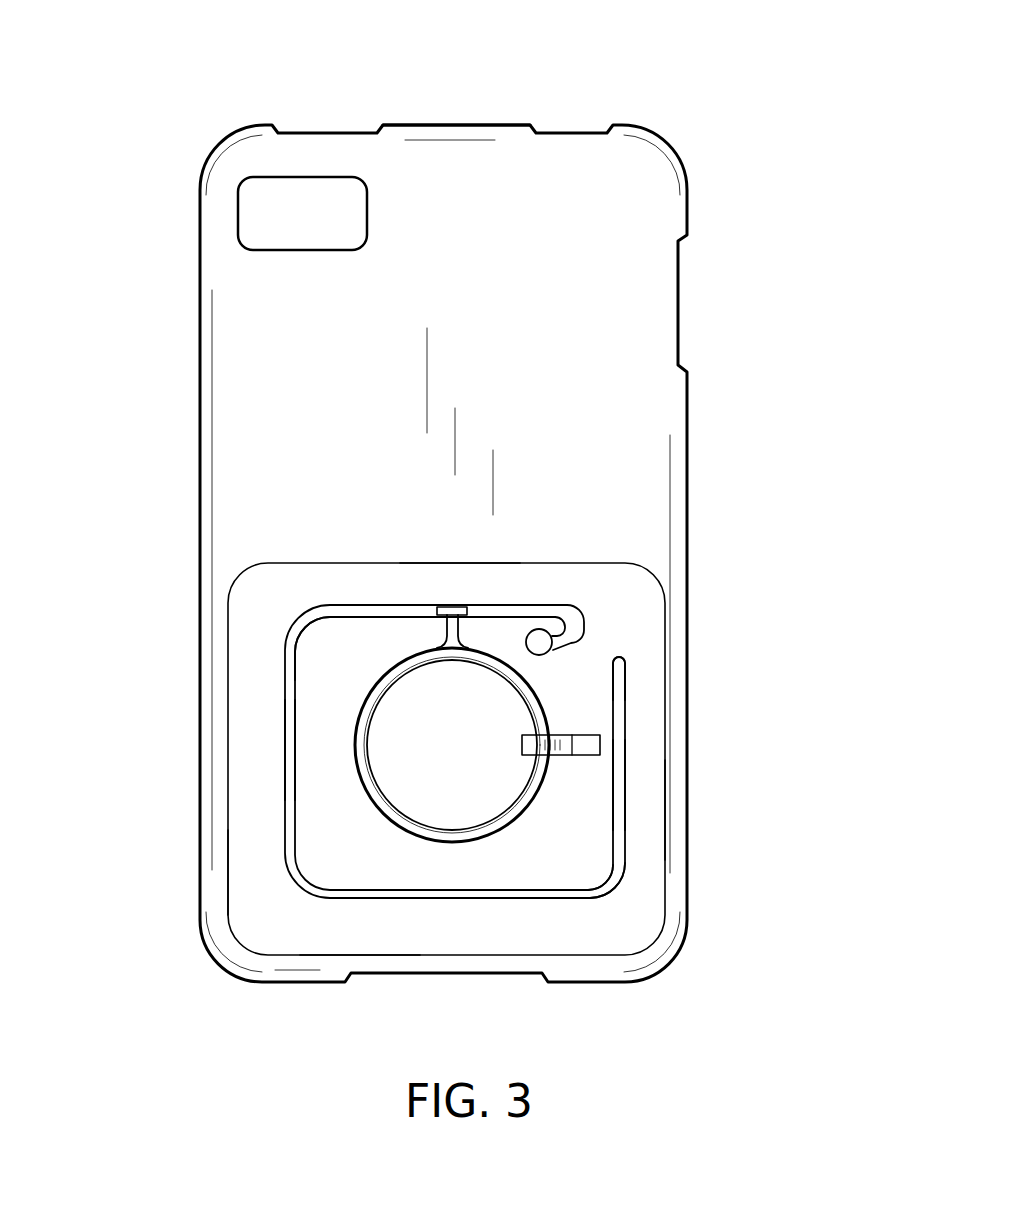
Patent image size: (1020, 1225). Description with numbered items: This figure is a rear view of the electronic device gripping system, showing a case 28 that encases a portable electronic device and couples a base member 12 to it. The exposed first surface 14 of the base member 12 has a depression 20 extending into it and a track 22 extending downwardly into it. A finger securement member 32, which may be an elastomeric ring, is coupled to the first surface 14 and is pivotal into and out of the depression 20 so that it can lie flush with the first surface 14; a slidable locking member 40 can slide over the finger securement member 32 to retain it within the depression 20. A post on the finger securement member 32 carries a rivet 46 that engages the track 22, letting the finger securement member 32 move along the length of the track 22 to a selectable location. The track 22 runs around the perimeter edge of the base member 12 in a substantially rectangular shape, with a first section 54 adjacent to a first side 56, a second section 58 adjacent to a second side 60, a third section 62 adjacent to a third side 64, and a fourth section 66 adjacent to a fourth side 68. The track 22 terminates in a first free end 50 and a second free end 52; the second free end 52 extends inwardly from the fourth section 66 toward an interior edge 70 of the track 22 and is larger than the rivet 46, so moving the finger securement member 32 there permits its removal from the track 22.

The base member 12 is at (603, 557).
The first surface 14 is at (290, 618).
The depression 20 is at (340, 772).
The track 22 is at (605, 896).
The case 28 is at (453, 125).
The finger securement member 32 is at (392, 822).
The locking member 40 is at (562, 737).
The rivet 46 is at (443, 606).
The first free end 50 is at (619, 656).
The second free end 52 is at (565, 660).
The first section 54 is at (622, 778).
The first side 56 is at (665, 810).
The second section 58 is at (466, 898).
The second side 60 is at (347, 955).
The third section 62 is at (285, 750).
The third side 64 is at (228, 877).
The fourth section 66 is at (510, 605).
The fourth side 68 is at (455, 563).
The interior edge 70 is at (303, 670).